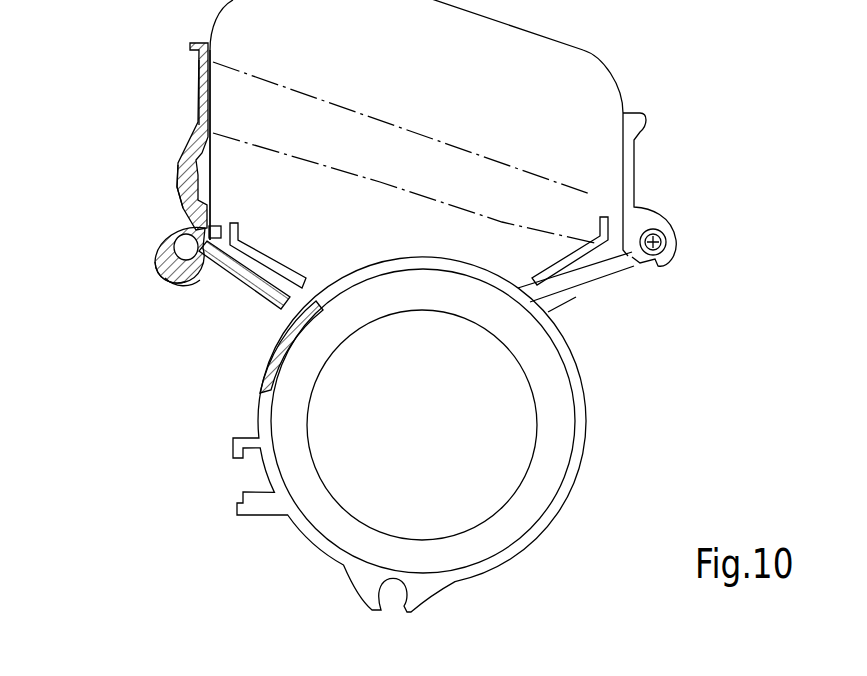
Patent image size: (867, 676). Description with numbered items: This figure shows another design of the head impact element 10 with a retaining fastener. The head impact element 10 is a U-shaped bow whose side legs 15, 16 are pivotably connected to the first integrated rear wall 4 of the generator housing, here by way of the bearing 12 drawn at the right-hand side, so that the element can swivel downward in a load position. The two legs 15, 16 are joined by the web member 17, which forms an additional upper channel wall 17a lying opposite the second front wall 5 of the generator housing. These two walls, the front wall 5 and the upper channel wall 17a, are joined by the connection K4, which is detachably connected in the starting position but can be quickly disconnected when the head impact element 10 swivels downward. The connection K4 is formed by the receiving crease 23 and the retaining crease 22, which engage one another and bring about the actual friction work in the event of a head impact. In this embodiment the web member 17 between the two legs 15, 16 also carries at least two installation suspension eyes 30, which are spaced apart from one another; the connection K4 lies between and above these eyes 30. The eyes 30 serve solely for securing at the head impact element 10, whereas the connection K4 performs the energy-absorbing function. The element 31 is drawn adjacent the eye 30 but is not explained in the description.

The housing 10 is at (411, 130).
The axis 15 is at (361, 172).
The axis 16 is at (410, 123).
The screw 12 is at (667, 247).
The holder 4 is at (586, 296).
The clip 5 is at (210, 214).
The housing wall edge 23 is at (212, 192).
The seal 17 is at (200, 80).
The seal leg 17a is at (200, 107).
The edge K4 is at (178, 199).
The seal loop 22 is at (177, 211).
The seal lip 31 is at (153, 256).
The seal bead 30 is at (160, 282).